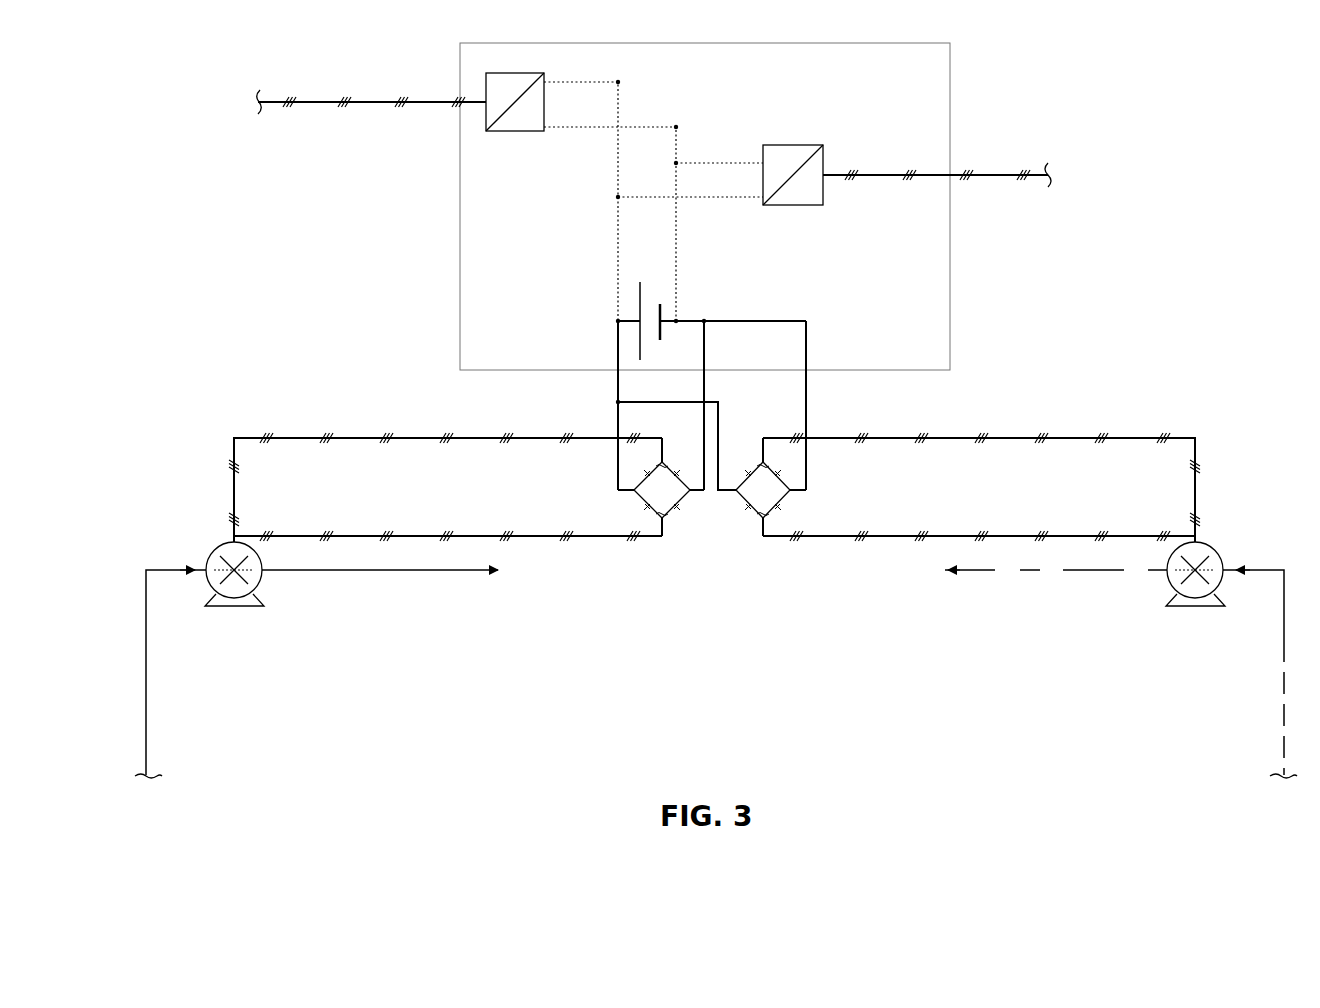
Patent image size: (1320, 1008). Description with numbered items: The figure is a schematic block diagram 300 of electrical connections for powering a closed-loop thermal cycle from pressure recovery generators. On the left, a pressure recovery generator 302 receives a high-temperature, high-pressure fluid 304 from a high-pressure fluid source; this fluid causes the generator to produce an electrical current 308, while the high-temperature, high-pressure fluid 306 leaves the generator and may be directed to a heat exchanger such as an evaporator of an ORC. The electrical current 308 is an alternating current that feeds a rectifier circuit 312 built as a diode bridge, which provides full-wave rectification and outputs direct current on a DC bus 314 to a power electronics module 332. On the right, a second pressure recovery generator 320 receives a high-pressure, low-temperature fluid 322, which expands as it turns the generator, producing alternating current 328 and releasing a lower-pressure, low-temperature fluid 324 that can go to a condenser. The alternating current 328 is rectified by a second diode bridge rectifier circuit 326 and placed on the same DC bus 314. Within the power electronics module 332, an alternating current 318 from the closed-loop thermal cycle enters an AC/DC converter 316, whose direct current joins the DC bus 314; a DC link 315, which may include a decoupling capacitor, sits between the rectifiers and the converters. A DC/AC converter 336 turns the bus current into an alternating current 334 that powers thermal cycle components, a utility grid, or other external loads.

The schematic block diagram 300 is at (215, 101).
The pressure recovery generator 302 is at (246, 613).
The high-temperature, high-pressure fluid 304 is at (148, 730).
The high-temperature, high-pressure fluid 306 is at (375, 572).
The electrical current 308 is at (366, 436).
The rectifier circuit 312 is at (638, 503).
The DC bus 314 is at (616, 342).
The DC link 315 is at (656, 298).
The AC/DC converter 316 is at (530, 71).
The alternating current 318 is at (323, 101).
The second pressure recovery generator 320 is at (1192, 612).
The high-pressure, low-temperature fluid 322 is at (1283, 734).
The lower-pressure, low-temperature fluid 324 is at (1092, 572).
The rectifier circuit 326 is at (792, 503).
The alternating current 328 is at (1078, 437).
The power electronics module 332 is at (950, 356).
The alternating current 334 is at (1010, 174).
The DC/AC converter 336 is at (795, 141).